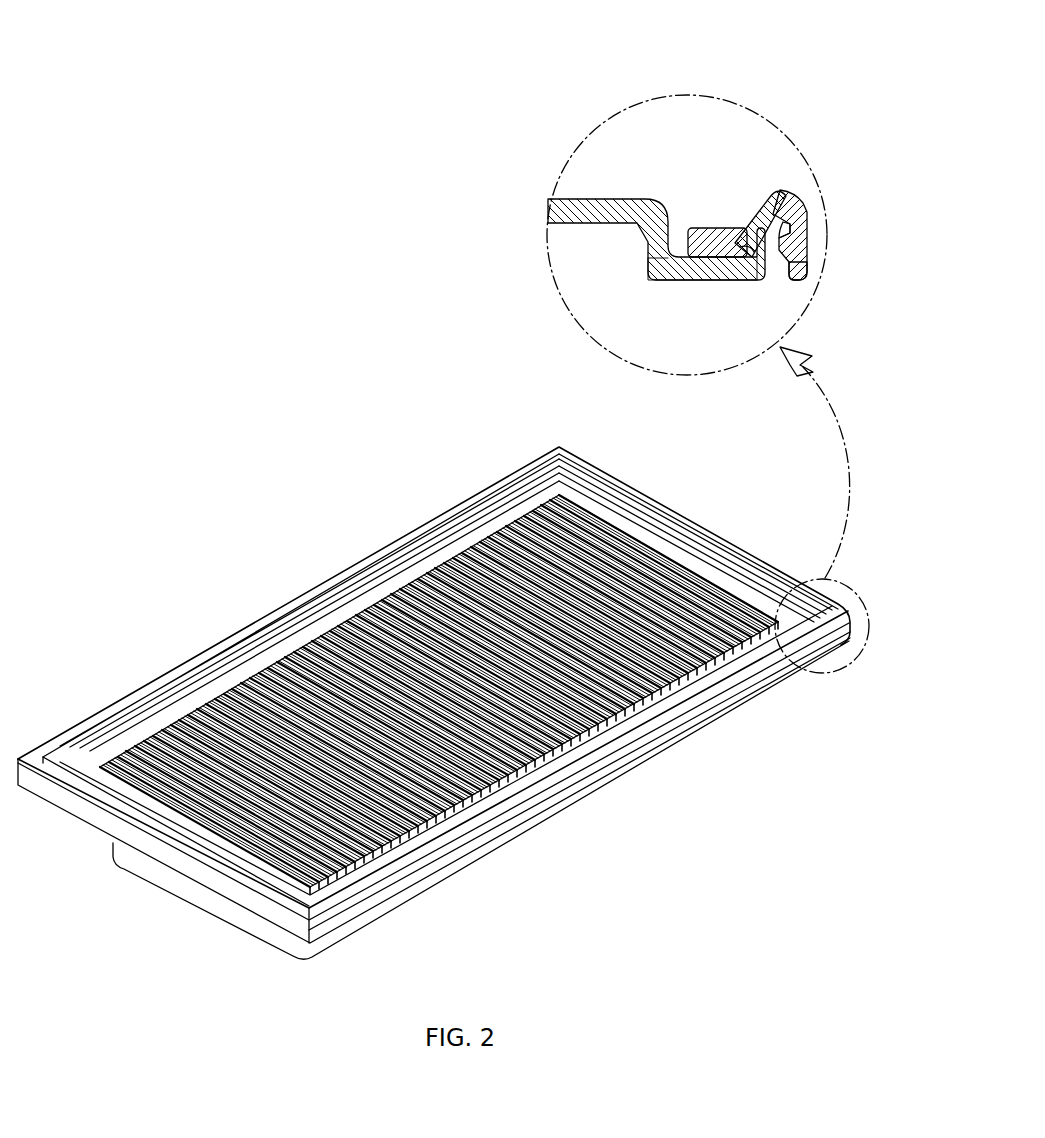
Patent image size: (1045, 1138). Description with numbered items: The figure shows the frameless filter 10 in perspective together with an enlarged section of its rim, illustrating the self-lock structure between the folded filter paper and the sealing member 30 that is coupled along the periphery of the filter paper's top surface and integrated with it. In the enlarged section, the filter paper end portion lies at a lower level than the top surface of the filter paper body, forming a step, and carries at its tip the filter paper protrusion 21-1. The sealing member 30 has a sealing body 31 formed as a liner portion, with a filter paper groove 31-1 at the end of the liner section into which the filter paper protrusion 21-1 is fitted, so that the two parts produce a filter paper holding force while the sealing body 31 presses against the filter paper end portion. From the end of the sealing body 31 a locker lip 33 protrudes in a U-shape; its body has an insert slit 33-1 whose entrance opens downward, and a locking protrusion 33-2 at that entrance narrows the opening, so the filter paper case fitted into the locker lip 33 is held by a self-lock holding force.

The frameless filter 10 is at (170, 520).
The filter paper protrusion 21-1 is at (747, 257).
The sealing member 30 is at (475, 497).
The sealing body 31 is at (715, 235).
The filter paper groove 31-1 is at (743, 233).
The locker lip 33 is at (797, 208).
The insert slit 33-1 is at (780, 236).
The locking protrusion 33-2 is at (800, 263).